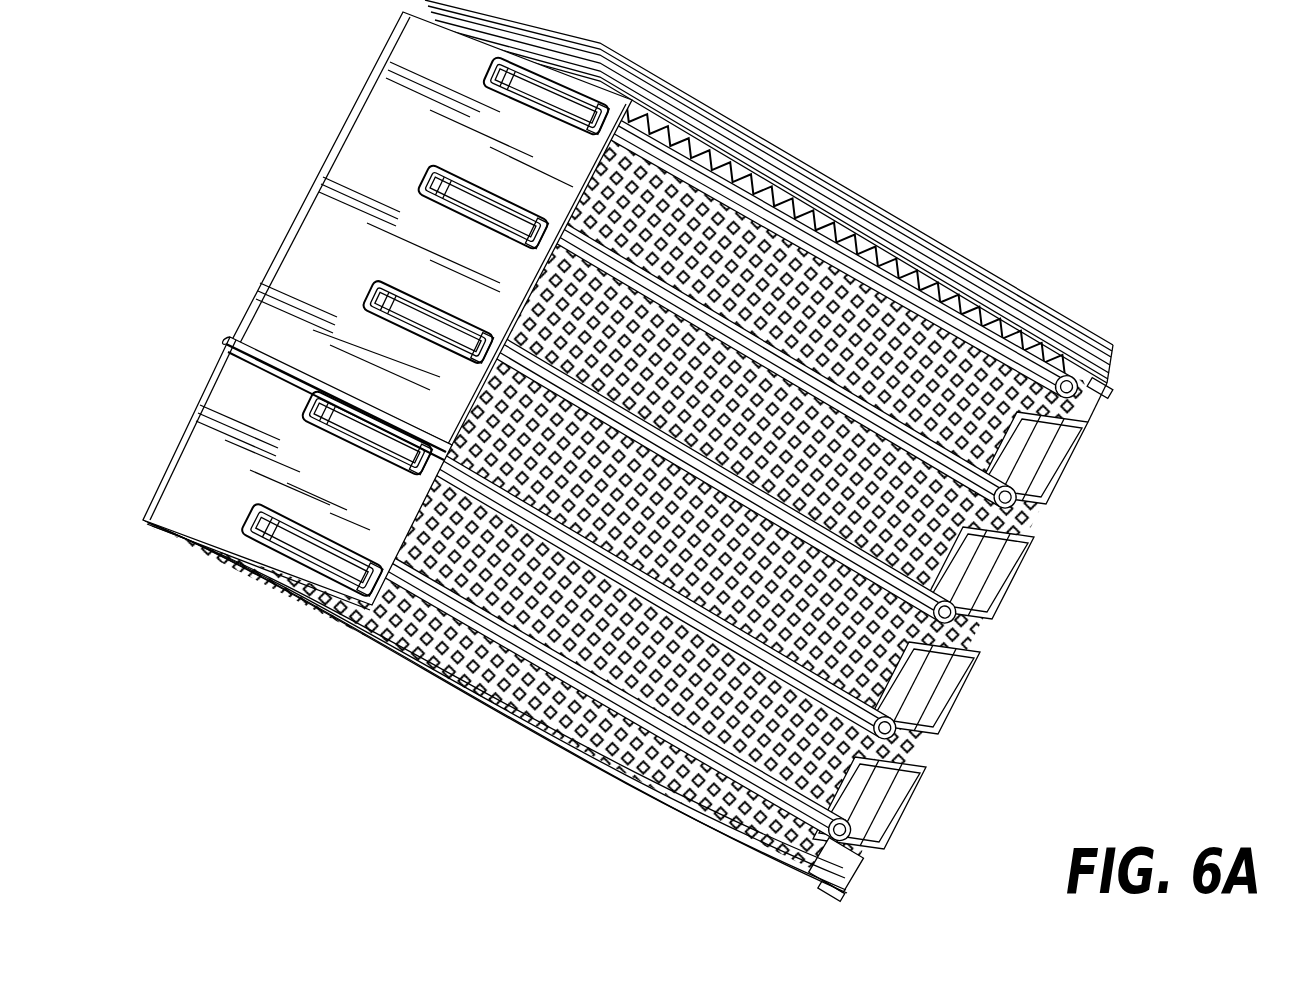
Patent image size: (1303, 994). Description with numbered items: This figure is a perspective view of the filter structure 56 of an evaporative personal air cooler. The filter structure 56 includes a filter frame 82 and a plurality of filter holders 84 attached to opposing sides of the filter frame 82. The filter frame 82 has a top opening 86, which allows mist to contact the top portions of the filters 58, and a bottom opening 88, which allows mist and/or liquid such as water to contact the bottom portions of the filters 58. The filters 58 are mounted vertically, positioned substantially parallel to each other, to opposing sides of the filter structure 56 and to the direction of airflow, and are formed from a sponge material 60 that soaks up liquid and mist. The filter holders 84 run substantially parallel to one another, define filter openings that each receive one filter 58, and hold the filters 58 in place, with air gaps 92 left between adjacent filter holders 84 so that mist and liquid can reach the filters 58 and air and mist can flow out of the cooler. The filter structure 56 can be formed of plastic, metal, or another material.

The filter structure 56 is at (374, 758).
The filters 58 is at (618, 768).
The sponge material 60 is at (370, 625).
The filter frame 82 is at (385, 103).
The filter holders 84 is at (885, 721).
The top opening 86 is at (890, 240).
The bottom opening 88 is at (466, 703).
The air gaps 92 is at (1010, 388).